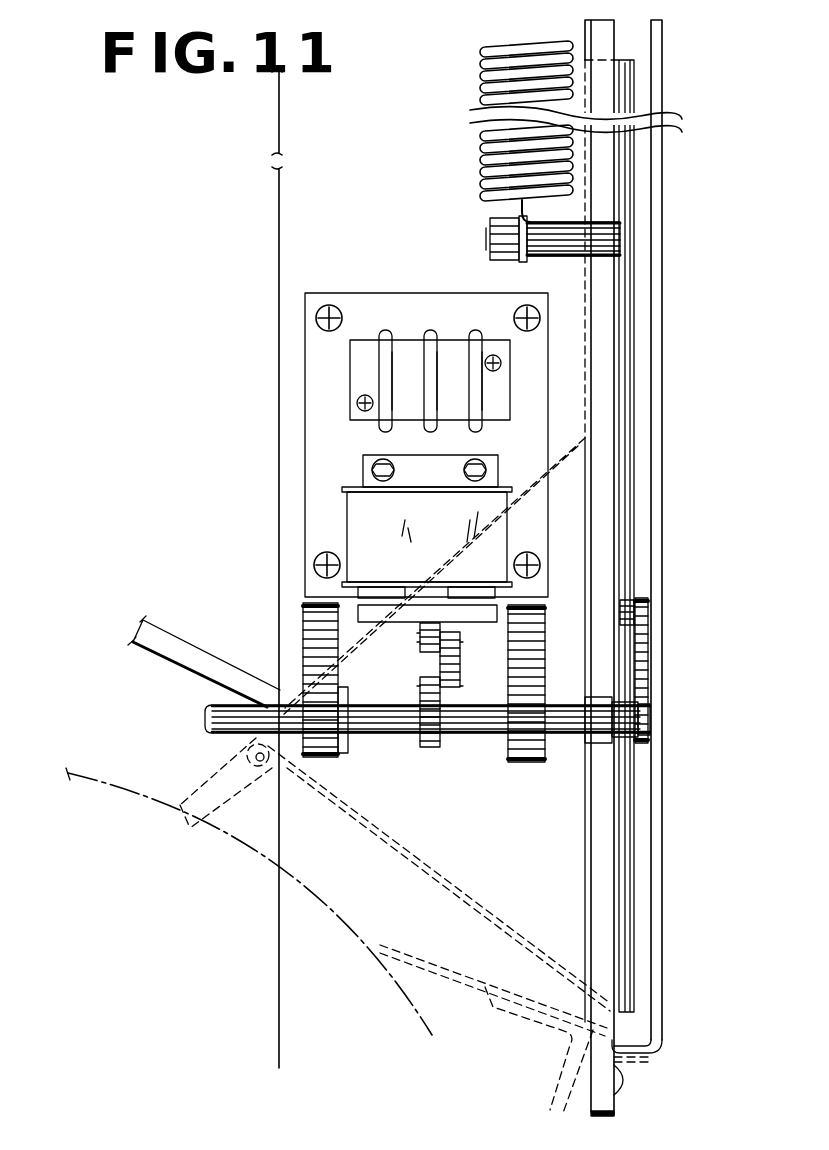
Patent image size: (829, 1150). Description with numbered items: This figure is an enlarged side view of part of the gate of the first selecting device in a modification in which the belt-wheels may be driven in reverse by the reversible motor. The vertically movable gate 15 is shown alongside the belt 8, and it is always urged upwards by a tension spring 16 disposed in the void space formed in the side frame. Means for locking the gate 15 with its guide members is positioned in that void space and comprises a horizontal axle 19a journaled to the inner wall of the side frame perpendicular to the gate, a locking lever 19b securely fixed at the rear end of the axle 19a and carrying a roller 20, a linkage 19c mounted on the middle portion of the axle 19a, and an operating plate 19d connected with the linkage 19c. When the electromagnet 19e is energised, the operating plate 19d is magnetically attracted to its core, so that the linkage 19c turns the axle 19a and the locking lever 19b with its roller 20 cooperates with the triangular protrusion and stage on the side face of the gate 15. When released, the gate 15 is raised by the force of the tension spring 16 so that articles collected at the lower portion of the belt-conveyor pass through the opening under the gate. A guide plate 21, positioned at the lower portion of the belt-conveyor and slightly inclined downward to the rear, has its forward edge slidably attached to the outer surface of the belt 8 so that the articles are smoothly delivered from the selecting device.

The belt 8 is at (128, 792).
The gate 15 is at (663, 850).
The tension spring 16 is at (483, 156).
The horizontal axle 19a is at (380, 737).
The locking lever 19b is at (649, 645).
The linkage 19c is at (452, 678).
The operating plate 19d is at (400, 620).
The electromagnet 19e is at (355, 523).
The roller 20 is at (636, 604).
The guide plate 21 is at (462, 977).